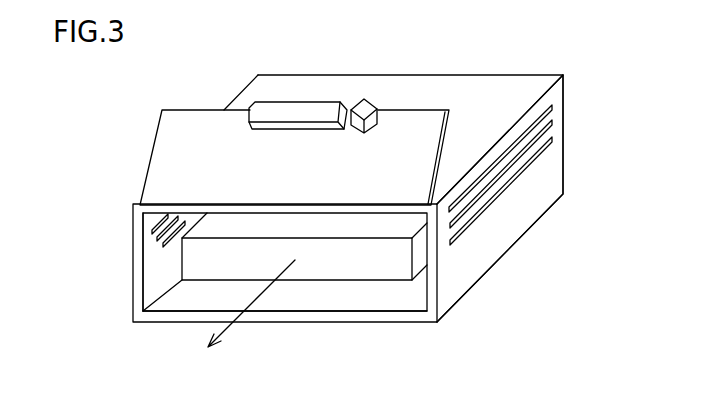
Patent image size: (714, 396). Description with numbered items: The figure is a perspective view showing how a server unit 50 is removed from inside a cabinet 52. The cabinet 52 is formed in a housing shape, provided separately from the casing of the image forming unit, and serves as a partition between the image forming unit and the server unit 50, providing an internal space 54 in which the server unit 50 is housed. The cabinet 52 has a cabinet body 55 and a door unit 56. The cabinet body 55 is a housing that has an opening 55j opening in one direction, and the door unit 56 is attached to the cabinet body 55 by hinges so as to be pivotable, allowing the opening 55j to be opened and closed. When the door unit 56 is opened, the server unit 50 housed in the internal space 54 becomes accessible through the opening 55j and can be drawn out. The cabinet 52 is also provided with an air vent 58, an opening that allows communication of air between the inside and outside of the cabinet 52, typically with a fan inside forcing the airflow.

The server unit 50 is at (355, 265).
The cabinet 52 is at (572, 92).
The internal space 54 is at (162, 260).
The cabinet body 55 is at (516, 222).
The opening 55j is at (158, 284).
The door unit 56 is at (172, 153).
The air vent 58 is at (538, 160).